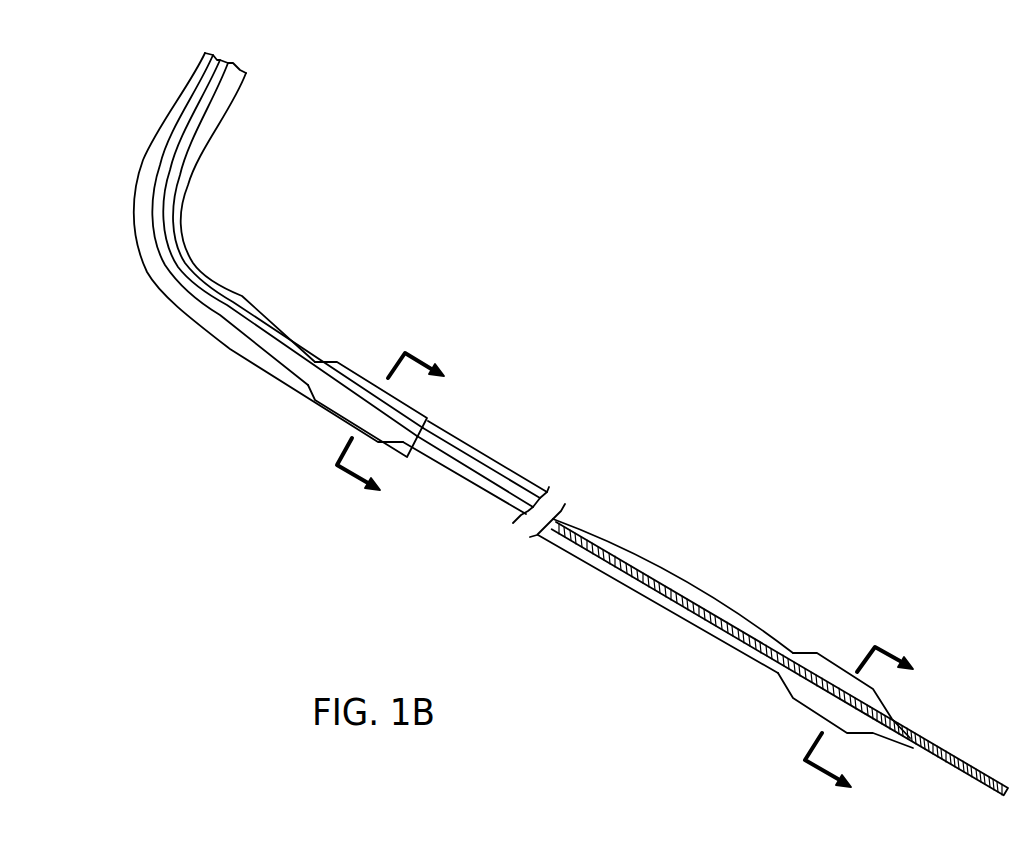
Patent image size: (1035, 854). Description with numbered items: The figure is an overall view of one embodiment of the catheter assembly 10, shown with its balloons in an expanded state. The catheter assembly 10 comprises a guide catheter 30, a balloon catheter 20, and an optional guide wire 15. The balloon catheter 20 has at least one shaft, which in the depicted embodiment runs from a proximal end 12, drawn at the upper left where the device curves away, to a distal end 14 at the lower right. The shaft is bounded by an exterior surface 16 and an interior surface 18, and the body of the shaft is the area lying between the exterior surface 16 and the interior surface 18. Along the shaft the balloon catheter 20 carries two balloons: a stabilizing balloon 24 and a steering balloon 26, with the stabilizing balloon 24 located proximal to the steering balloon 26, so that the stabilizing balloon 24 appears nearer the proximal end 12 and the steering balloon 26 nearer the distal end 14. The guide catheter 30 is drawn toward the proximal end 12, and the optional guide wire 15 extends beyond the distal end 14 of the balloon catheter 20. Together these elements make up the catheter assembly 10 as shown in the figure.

The catheter assembly 10 is at (315, 553).
The proximal end 12 is at (226, 199).
The distal end 14 is at (765, 712).
The guide wire 15 is at (993, 778).
The exterior surface 16 is at (609, 544).
The interior surface 18 is at (691, 602).
The balloon catheter 20 is at (500, 468).
The stabilizing balloon 24 is at (359, 378).
The steering balloon 26 is at (826, 665).
The guide catheter 30 is at (248, 303).